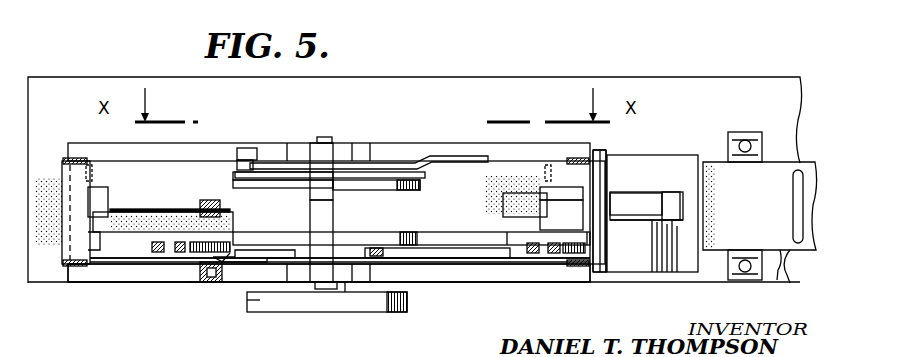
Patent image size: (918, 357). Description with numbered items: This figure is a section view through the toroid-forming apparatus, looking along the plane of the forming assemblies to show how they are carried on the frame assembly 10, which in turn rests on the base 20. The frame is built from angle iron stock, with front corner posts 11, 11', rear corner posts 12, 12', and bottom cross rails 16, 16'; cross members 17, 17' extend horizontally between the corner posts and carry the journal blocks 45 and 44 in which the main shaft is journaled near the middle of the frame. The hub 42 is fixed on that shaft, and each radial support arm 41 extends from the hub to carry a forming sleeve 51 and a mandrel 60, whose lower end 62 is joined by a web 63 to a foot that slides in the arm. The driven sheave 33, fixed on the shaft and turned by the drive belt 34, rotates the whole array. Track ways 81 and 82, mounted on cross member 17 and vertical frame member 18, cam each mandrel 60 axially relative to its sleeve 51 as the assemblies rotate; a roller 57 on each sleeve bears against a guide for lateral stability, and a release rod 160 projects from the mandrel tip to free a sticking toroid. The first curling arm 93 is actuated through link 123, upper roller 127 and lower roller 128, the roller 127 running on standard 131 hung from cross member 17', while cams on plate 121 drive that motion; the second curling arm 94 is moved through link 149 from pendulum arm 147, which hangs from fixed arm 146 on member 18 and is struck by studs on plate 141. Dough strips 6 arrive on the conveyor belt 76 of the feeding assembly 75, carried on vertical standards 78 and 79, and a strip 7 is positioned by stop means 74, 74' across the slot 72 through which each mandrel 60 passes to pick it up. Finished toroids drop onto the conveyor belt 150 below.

The base 20 is at (744, 74).
The frame assembly 10 is at (88, 290).
The cross member 17 is at (329, 288).
The cross member 17' is at (329, 141).
The front corner post 11 is at (59, 266).
The front corner post 11' is at (583, 283).
The rear corner post 12 is at (58, 150).
The rear corner post 12' is at (590, 146).
The bottom cross rail 16 is at (46, 212).
The bottom cross rail 16' is at (615, 213).
The forming sleeve 51 is at (96, 172).
The mandrel 60 is at (112, 196).
The lower roller 128 is at (222, 178).
The web 63 is at (197, 219).
The track way 82 is at (152, 246).
The radial support arm 41 is at (100, 247).
The standard 131 is at (250, 143).
The upper roller 127 is at (256, 158).
The journal block 44 is at (348, 149).
The arm 93 is at (432, 156).
The conveyor belt 150 is at (536, 174).
The stop means 74' is at (624, 203).
The roller 57 is at (605, 184).
The release rod 160 is at (686, 163).
The dough strip 7 is at (612, 229).
The center slot 72 is at (664, 228).
The stop means 74 is at (616, 288).
The conveyor belt assembly 75 is at (779, 172).
The dough strip 6 is at (804, 170).
The conveyor belt 76 is at (787, 245).
The vertical standard 78 is at (753, 282).
The vertical standard 79 is at (757, 140).
The hub 42 is at (337, 216).
The link 123 is at (268, 190).
The fixed arm 146 is at (238, 251).
The lower end of mandrel 62 is at (222, 205).
The plate 121 is at (398, 190).
The plate 141 is at (388, 236).
The arm 94 is at (383, 250).
The drive belt 34 is at (406, 303).
The link 149 is at (347, 272).
The journal block 45 is at (301, 277).
The driven sheave 33 is at (258, 307).
The pendulum arm 147 is at (257, 263).
The vertical frame member 18 is at (193, 290).
The track way 81 is at (182, 250).